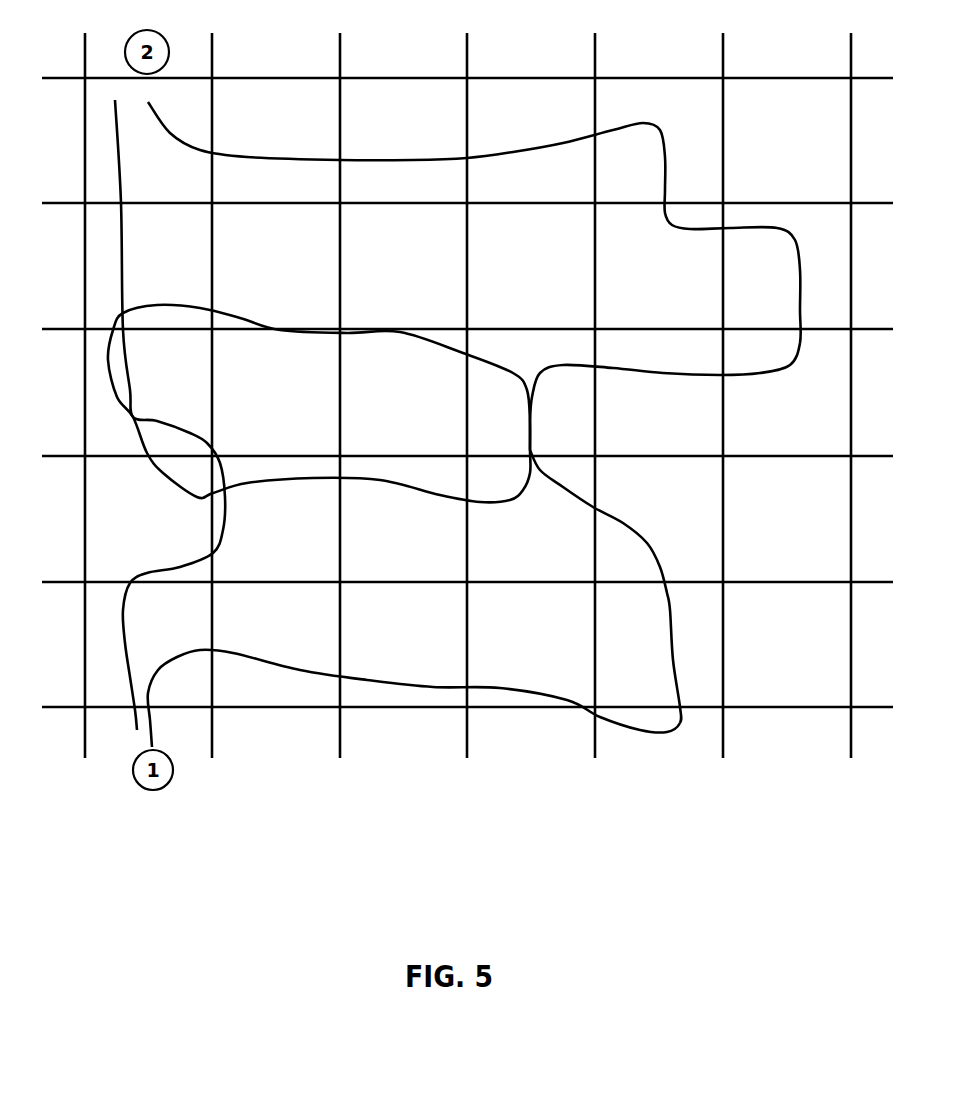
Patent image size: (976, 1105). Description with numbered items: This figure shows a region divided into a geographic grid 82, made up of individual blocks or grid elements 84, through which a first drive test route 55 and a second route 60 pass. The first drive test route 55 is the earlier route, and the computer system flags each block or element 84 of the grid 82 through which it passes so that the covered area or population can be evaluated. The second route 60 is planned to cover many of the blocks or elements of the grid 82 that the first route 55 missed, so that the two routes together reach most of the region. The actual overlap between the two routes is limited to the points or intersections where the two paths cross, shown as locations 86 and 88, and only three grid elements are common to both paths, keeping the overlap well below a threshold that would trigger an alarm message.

The drive test route 55 is at (288, 633).
The second route 60 is at (247, 157).
The grid 82 is at (82, 318).
The block or element of the grid 84 is at (100, 545).
The location 86 is at (663, 373).
The location 88 is at (287, 480).